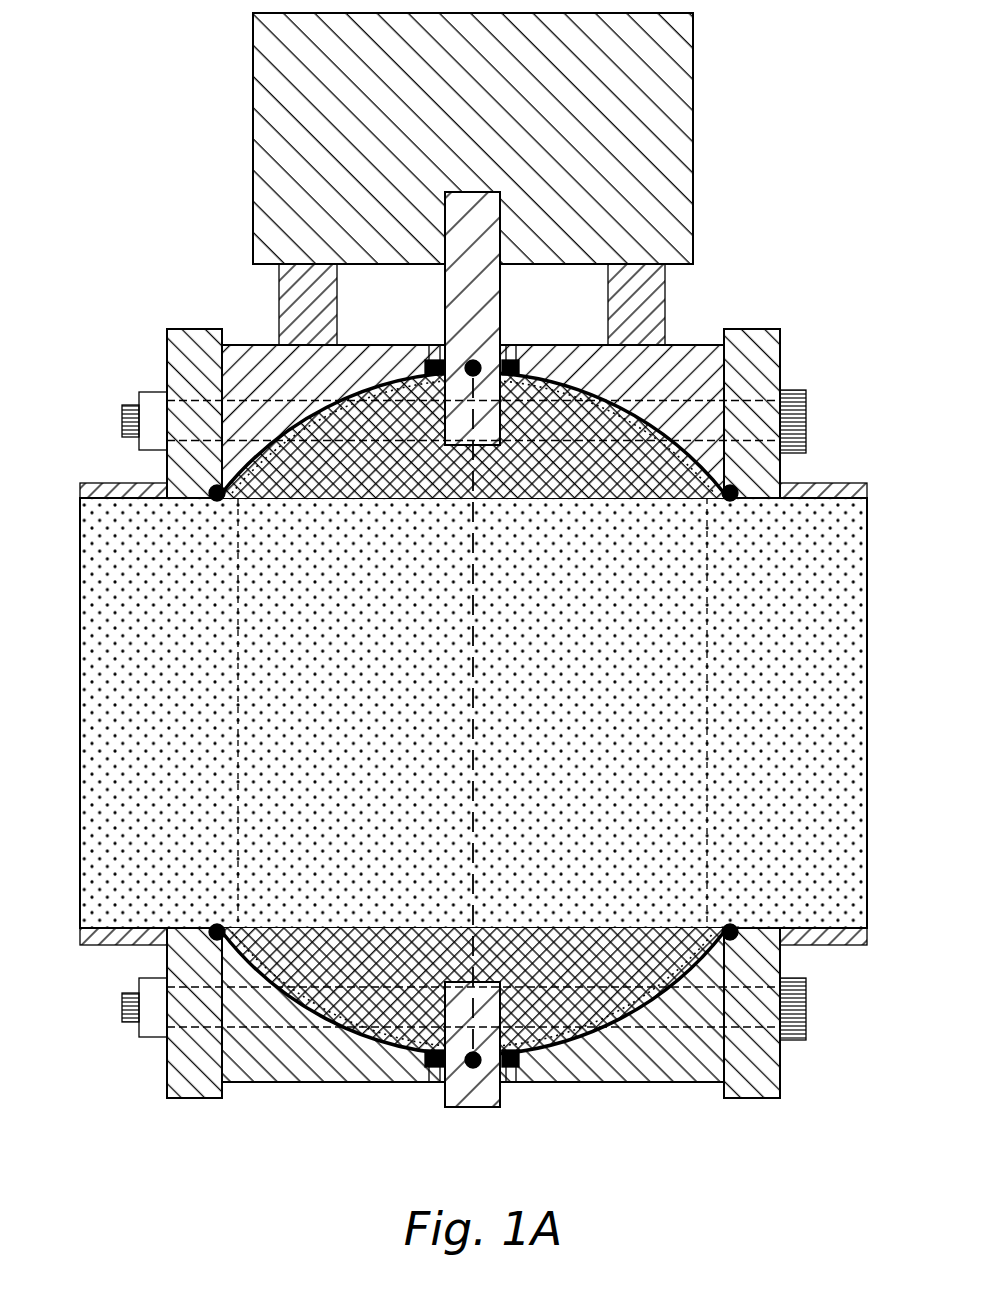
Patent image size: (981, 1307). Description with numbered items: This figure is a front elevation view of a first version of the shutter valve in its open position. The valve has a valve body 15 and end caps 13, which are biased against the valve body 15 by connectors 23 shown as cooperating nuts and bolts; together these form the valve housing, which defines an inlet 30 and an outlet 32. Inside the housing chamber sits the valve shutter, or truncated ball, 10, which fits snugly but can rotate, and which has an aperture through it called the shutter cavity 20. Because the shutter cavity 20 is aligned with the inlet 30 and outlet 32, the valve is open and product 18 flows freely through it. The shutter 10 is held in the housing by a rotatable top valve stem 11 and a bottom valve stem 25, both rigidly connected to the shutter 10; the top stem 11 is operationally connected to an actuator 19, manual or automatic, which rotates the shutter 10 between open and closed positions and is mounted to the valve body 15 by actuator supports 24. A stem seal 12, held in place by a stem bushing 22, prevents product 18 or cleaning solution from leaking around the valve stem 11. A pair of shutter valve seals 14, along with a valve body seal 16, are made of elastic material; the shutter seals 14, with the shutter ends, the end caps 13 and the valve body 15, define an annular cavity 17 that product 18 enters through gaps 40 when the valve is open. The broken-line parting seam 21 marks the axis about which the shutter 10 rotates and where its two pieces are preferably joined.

The valve shutter 10 is at (312, 455).
The top valve stem 11 is at (473, 285).
The stem seal 12 is at (425, 365).
The end caps 13 is at (186, 364).
The shutter valve seals 14 is at (180, 465).
The valve body 15 is at (657, 420).
The valve body seal 16 is at (466, 1072).
The annular cavity 17 is at (668, 442).
The product 18 is at (805, 527).
The actuator 19 is at (665, 105).
The shutter cavity 20 is at (707, 745).
The parting seam 21 is at (470, 845).
The stem bushing 22 is at (488, 366).
The connectors 23 is at (153, 393).
The actuator supports 24 is at (653, 282).
The bottom valve stem 25 is at (478, 1107).
The inlet 30 is at (82, 675).
The outlet 32 is at (867, 620).
The gap 40 is at (233, 500).